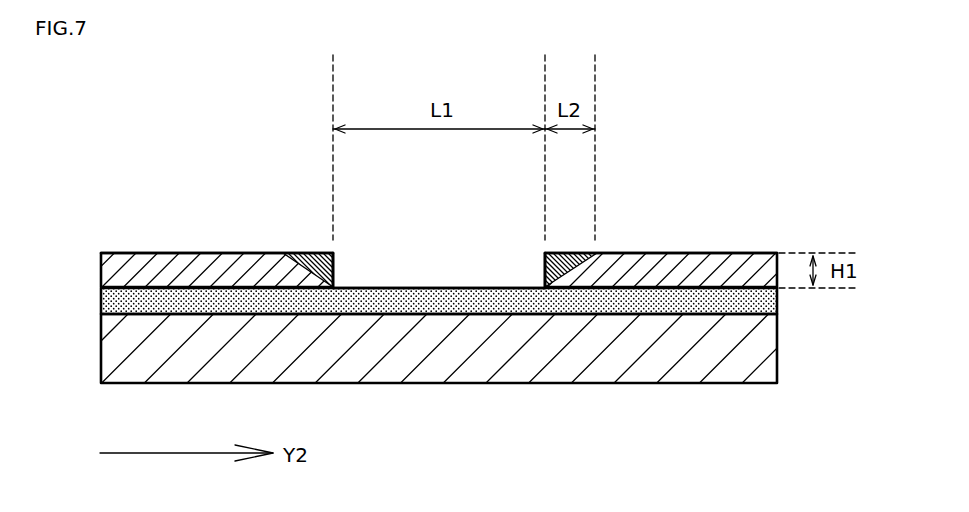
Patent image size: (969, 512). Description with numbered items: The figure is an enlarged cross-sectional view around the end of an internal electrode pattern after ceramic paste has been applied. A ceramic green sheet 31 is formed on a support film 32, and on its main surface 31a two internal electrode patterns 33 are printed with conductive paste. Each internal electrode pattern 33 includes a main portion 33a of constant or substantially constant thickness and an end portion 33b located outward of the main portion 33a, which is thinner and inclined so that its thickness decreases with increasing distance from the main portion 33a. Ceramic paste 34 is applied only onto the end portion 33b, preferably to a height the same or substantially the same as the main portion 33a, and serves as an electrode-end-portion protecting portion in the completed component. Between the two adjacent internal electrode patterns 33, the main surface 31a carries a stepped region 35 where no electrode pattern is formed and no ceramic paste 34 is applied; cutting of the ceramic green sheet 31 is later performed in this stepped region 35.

The ceramic green sheet 31 is at (777, 305).
The main surface of ceramic green sheet 31a is at (394, 288).
The support film 32 is at (777, 363).
The internal electrode pattern 33 is at (176, 251).
The main portion of internal electrode pattern 33a is at (226, 253).
The end portion of internal electrode pattern 33b is at (300, 253).
The ceramic paste 34 is at (318, 253).
The stepped region 35 is at (447, 271).